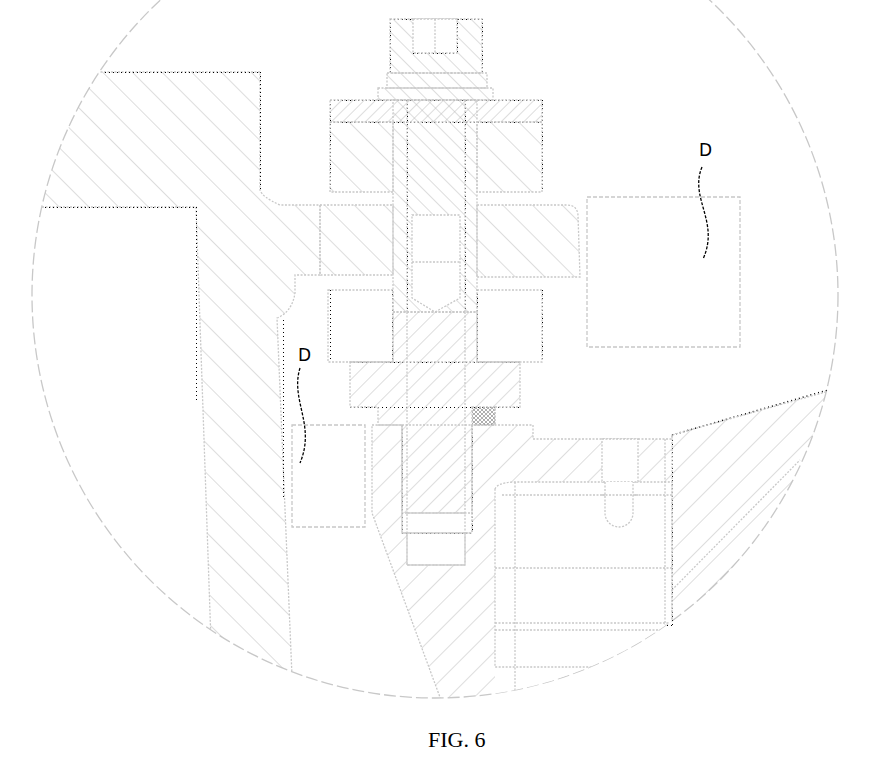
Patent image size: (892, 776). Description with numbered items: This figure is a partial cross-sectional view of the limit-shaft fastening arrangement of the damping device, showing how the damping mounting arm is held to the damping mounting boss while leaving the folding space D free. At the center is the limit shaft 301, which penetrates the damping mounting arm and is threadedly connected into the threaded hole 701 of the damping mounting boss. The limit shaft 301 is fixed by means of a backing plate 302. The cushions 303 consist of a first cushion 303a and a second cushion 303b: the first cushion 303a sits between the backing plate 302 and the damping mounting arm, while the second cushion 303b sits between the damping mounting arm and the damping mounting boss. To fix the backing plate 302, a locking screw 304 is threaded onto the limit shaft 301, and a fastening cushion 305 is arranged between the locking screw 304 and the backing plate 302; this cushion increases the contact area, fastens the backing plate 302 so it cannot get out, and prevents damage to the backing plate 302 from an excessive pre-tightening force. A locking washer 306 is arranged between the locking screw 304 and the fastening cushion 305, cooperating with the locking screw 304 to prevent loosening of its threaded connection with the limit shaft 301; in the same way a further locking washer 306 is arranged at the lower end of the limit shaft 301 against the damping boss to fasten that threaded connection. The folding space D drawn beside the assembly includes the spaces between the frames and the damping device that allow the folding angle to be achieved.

The limit shaft 301 is at (473, 386).
The backing plate 302 is at (518, 112).
The cushions 303 is at (502, 242).
The first cushion 303a is at (503, 156).
The second cushion 303b is at (477, 326).
The locking screw 304 is at (462, 66).
The fastening cushion 305 is at (482, 92).
The locking washer 306 is at (482, 78).
The threaded hole 701 is at (433, 550).